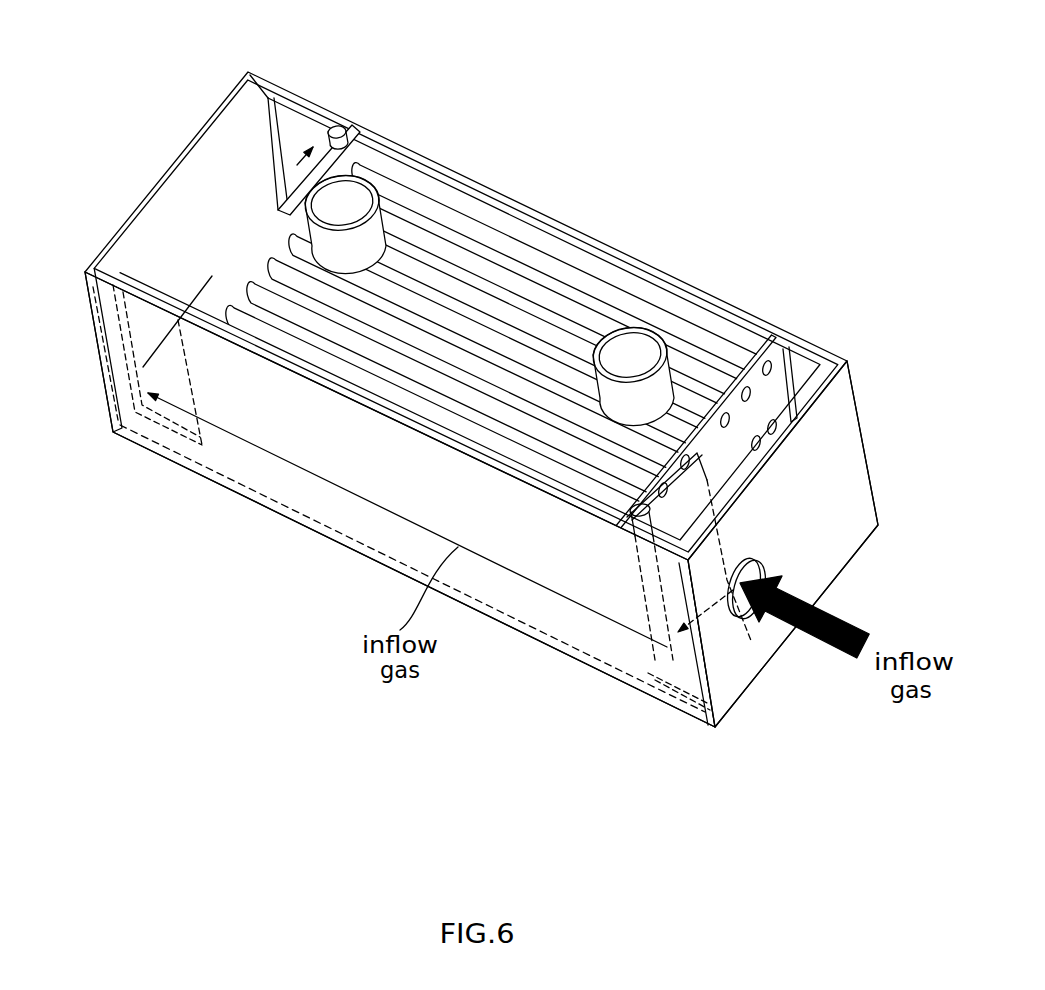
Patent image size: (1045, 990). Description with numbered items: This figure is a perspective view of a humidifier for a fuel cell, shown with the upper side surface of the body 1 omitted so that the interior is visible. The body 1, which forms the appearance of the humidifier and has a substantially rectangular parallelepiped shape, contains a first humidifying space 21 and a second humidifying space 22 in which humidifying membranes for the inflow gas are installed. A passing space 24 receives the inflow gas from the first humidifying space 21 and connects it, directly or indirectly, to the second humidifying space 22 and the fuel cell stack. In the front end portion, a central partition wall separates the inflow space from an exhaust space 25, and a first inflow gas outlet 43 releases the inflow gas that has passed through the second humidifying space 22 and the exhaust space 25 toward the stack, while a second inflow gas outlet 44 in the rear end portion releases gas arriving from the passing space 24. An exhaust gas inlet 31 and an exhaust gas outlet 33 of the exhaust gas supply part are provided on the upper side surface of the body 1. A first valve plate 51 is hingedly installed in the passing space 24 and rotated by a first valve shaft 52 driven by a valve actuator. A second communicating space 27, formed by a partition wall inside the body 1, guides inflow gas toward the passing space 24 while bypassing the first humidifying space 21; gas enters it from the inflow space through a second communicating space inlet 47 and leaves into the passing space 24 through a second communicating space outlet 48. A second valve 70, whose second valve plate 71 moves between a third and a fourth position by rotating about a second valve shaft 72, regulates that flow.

The body 1 is at (181, 97).
The first humidifying space 21 is at (435, 320).
The second humidifying space 22 is at (566, 252).
The passing space 24 is at (185, 218).
The exhaust space 25 is at (760, 403).
The second communicating space 27 is at (368, 485).
The exhaust gas inlet 31 is at (374, 230).
The exhaust gas outlet 33 is at (660, 380).
The first inflow gas outlet 43 is at (808, 363).
The second inflow gas outlet 44 is at (281, 100).
The second communicating space inlet 47 is at (676, 705).
The second communicating space outlet 48 is at (117, 345).
The first valve plate 51 is at (323, 152).
The first valve shaft 52 is at (343, 123).
The second valve 70 is at (517, 707).
The second valve plate 71 is at (670, 518).
The second valve shaft 72 is at (640, 513).